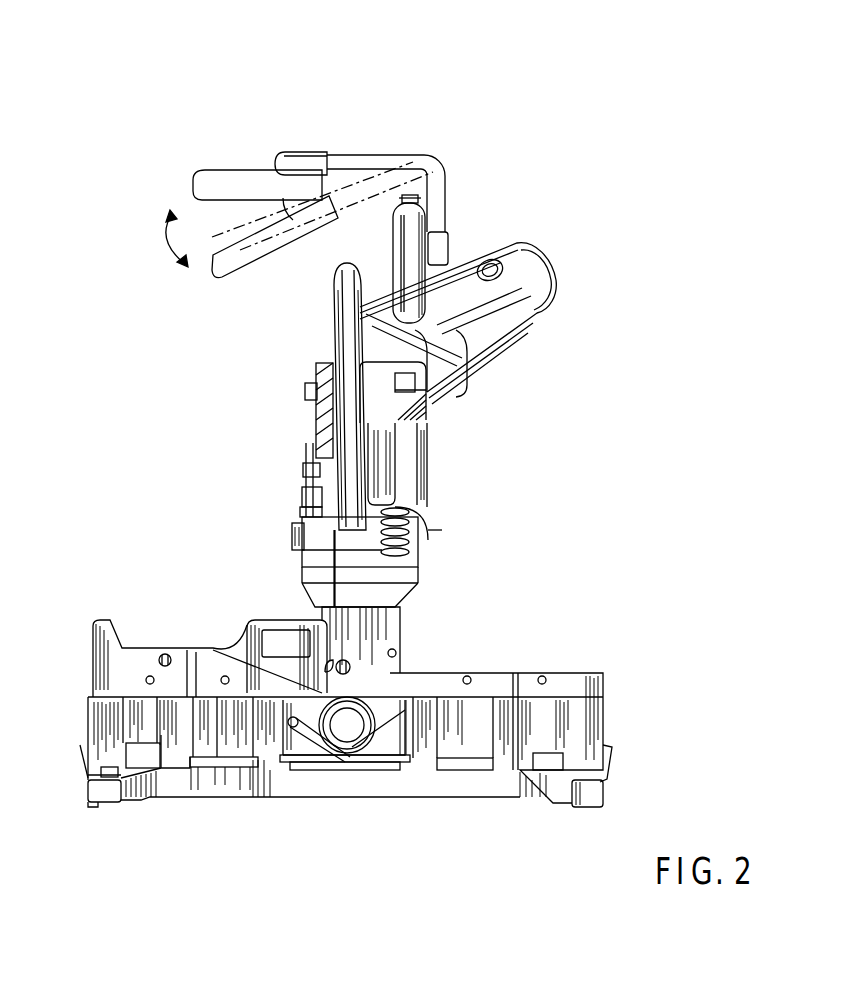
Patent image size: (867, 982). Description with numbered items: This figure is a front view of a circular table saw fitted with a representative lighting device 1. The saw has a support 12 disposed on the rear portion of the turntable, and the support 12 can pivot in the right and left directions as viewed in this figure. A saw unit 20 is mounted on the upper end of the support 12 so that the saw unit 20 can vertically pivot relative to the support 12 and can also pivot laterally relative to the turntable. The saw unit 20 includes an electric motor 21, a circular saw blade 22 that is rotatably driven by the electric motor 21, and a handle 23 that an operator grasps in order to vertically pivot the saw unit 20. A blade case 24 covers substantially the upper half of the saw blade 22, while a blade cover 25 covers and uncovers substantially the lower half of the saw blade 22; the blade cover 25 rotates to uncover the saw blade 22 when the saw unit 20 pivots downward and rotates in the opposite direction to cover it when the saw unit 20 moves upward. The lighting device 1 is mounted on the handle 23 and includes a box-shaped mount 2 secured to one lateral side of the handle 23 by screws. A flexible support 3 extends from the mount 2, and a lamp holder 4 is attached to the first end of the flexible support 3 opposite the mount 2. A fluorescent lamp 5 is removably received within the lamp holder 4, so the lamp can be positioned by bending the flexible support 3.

The lighting device 1 is at (364, 100).
The mount 2 is at (440, 250).
The flexible support 3 is at (457, 165).
The lamp holder 4 is at (242, 253).
The fluorescent lamp 5 is at (299, 183).
The support 12 is at (390, 632).
The saw unit 20 is at (492, 464).
The electric motor 21 is at (483, 318).
The circular saw blade 22 is at (277, 438).
The handle 23 is at (446, 238).
The blade case 24 is at (330, 302).
The blade cover 25 is at (303, 457).